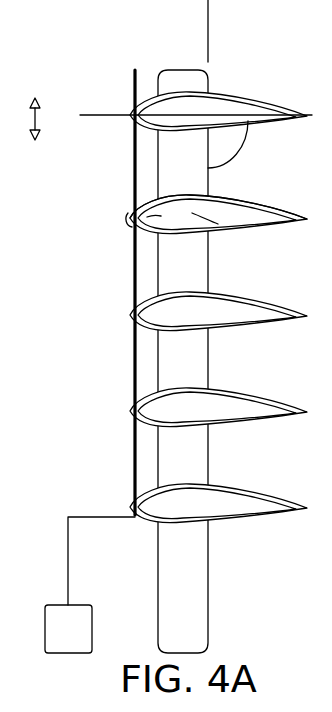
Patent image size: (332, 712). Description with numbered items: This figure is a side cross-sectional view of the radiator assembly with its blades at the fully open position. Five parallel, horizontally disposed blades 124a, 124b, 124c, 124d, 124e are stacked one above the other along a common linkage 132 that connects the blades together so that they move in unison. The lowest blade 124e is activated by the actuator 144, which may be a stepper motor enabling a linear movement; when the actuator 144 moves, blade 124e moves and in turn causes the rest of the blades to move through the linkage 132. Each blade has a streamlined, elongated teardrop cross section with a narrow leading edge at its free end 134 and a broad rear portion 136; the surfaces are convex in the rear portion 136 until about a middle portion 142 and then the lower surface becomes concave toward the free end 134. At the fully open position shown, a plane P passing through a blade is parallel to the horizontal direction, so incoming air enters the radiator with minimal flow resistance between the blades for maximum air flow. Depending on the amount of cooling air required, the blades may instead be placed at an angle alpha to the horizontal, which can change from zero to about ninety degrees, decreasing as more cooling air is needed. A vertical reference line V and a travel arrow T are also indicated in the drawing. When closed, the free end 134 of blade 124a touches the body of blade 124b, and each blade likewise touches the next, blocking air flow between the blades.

The blade 124a is at (248, 100).
The blade 124b is at (264, 223).
The blade 124c is at (240, 320).
The blade 124d is at (240, 416).
The blade 124e is at (240, 513).
The linkage 132 is at (133, 277).
The free end 134 is at (246, 208).
The rear portion 136 is at (133, 225).
The middle portion 142 is at (212, 223).
The actuator 144 is at (80, 603).
The vertical reference axis V is at (208, 28).
The plane P is at (95, 113).
The travel direction T is at (24, 119).
The angle alpha is at (232, 144).